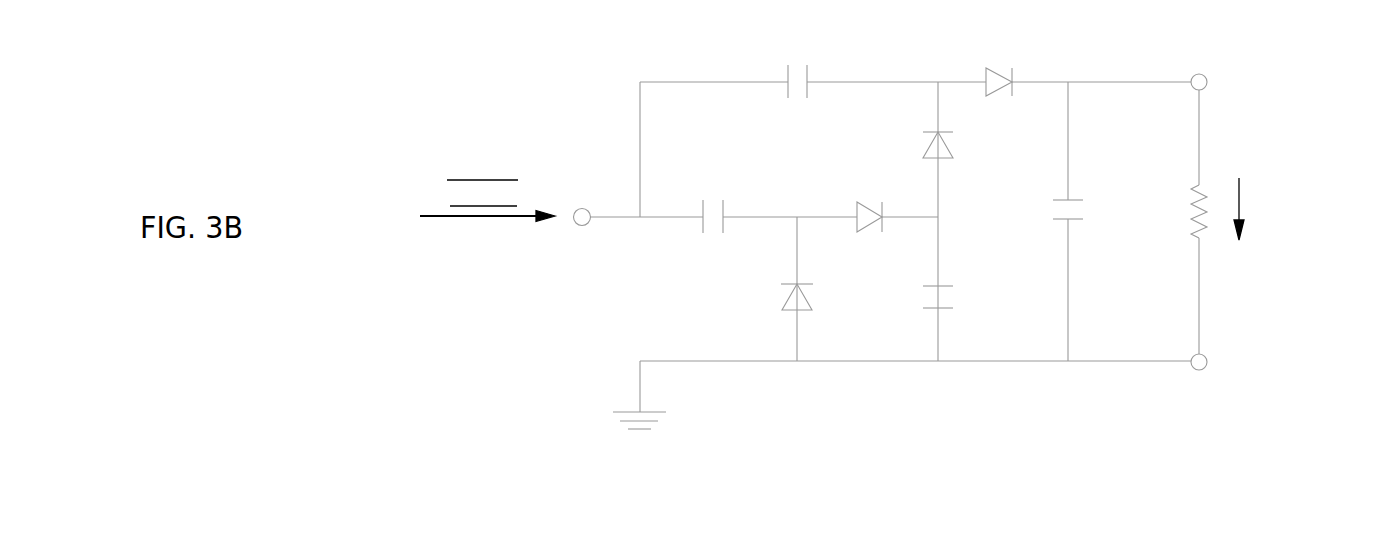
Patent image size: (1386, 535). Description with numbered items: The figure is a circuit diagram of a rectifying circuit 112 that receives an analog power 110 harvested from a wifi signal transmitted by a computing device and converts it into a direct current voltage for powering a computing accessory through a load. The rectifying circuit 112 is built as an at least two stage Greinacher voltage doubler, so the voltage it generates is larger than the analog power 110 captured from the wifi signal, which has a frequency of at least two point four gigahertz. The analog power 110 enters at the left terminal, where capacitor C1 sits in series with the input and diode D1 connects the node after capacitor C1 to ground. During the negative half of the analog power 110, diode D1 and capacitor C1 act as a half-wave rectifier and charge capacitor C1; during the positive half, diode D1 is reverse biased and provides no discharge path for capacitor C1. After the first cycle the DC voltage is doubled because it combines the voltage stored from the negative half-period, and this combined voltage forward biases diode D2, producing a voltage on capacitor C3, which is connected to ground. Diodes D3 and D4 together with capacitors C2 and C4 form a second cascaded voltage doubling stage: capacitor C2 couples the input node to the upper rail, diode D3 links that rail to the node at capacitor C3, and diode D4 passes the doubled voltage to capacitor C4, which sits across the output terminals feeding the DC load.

The analog power 110 is at (487, 173).
The rectifying circuit 112 is at (585, 61).
The capacitor C1 is at (712, 233).
The capacitor C2 is at (798, 98).
The capacitor C3 is at (955, 295).
The capacitor C4 is at (1085, 209).
The diode D1 is at (780, 296).
The diode D2 is at (870, 233).
The diode D3 is at (920, 144).
The diode D4 is at (999, 97).